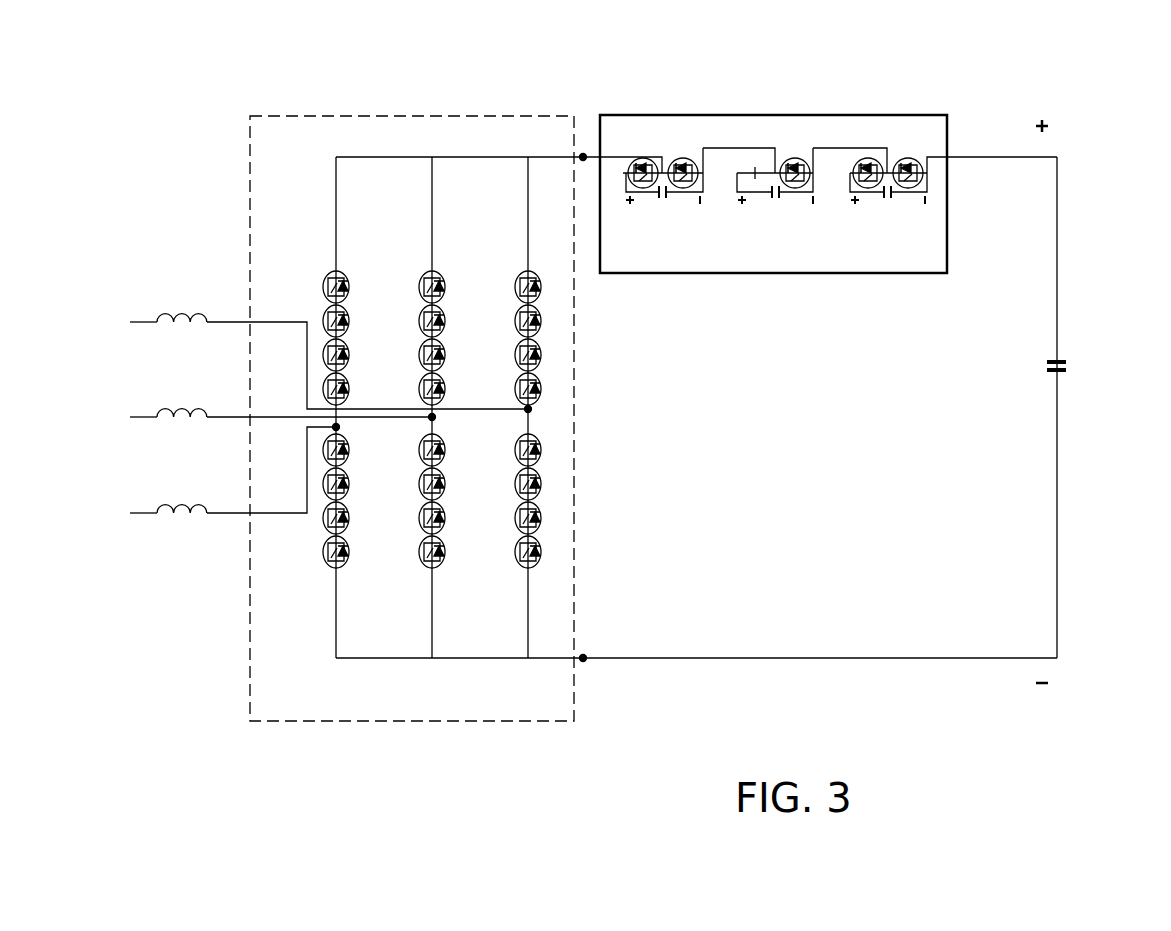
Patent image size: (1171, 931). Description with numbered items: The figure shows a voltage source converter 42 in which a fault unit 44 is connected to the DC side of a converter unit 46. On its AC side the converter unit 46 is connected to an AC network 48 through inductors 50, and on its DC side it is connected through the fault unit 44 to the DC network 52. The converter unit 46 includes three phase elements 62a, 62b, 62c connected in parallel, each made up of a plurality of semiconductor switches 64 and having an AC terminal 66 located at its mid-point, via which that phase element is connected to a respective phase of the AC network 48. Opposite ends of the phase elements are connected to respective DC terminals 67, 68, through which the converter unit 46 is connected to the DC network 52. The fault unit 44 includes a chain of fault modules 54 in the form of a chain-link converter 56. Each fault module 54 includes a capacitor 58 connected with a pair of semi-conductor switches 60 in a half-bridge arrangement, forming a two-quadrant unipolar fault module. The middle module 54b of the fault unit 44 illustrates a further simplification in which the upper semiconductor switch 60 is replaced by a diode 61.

The voltage source converter 42 is at (104, 150).
The fault unit 44 is at (838, 115).
The converter unit 46 is at (326, 116).
The AC network 48 is at (146, 323).
The inductor 50 is at (166, 314).
The DC network 52 is at (1061, 154).
The fault module 54 is at (666, 209).
The middle module 54b is at (774, 136).
The chain-link converter 56 is at (890, 132).
The capacitor 58 is at (660, 196).
The semi-conductor switch 60 is at (682, 158).
The diode 61 is at (765, 170).
The phase element 62a is at (528, 225).
The phase element 62b is at (432, 246).
The phase element 62c is at (370, 407).
The semiconductor switch 64 is at (350, 288).
The AC terminal 66 is at (340, 427).
The DC terminal 67 is at (585, 661).
The DC terminal 68 is at (583, 156).